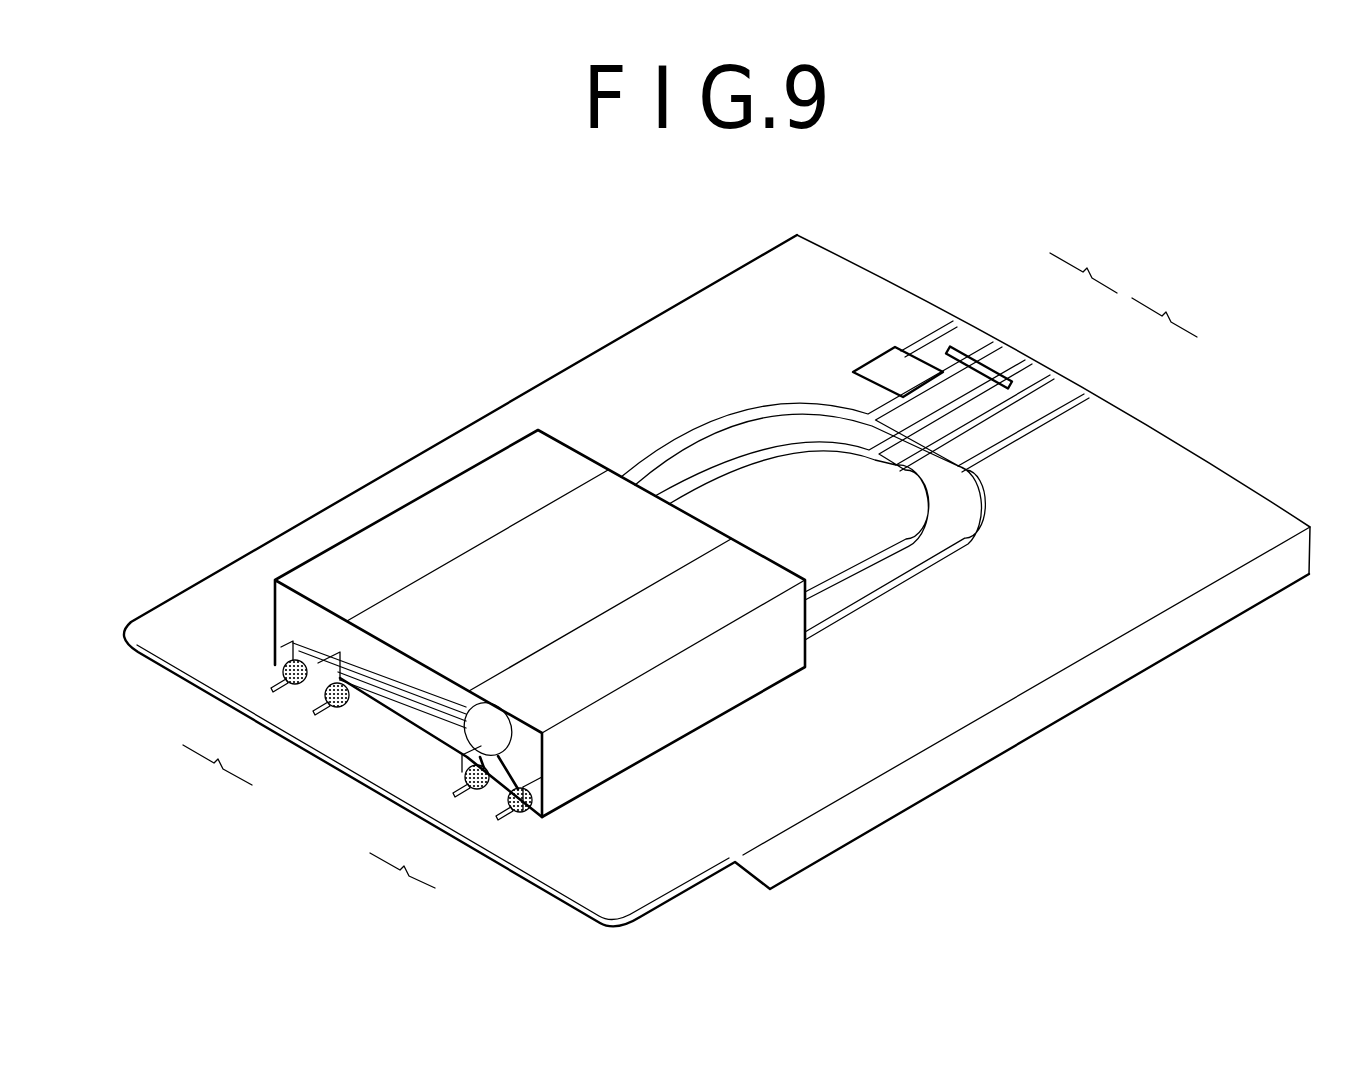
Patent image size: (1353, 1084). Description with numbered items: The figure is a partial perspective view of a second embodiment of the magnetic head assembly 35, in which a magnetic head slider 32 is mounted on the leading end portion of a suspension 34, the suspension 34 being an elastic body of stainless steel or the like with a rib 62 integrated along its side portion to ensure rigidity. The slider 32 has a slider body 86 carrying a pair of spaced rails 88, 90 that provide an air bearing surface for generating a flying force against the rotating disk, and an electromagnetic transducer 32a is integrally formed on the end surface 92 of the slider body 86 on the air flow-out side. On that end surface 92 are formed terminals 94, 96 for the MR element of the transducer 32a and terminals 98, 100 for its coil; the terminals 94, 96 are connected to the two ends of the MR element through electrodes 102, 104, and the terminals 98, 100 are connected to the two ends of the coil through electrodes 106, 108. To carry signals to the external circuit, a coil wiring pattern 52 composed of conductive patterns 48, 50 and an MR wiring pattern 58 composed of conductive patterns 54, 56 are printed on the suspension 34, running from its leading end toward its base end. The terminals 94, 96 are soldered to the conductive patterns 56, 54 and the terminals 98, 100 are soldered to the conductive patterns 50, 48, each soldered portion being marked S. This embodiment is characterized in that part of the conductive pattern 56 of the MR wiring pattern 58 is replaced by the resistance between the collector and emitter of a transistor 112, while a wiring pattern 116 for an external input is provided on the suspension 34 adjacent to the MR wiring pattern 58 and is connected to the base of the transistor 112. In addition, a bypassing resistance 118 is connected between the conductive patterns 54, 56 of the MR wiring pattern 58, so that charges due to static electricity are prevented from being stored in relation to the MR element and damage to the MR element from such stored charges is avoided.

The magnetic head slider 32 is at (363, 484).
The electromagnetic transducer 32a is at (490, 714).
The suspension 34 is at (198, 590).
The magnetic head assembly 35 is at (263, 496).
The conductive pattern 48 is at (1083, 392).
The conductive pattern 50 is at (1043, 365).
The coil wiring pattern 52 is at (781, 599).
The conductive pattern 54 is at (1010, 357).
The conductive pattern 56 is at (985, 345).
The MR wiring pattern 58 is at (648, 524).
The rib 62 is at (1035, 727).
The slider body 86 is at (677, 732).
The rail 88 is at (457, 483).
The rail 90 is at (748, 565).
The end surface 92 is at (258, 598).
The terminal 94 is at (282, 648).
The terminal 96 is at (322, 663).
The terminal 98 is at (458, 768).
The terminal 100 is at (545, 790).
The electrode 102 is at (414, 687).
The electrode 104 is at (433, 707).
The electrode 106 is at (448, 758).
The electrode 108 is at (512, 765).
The transistor 112 is at (865, 358).
The wiring pattern for external input 116 is at (917, 330).
The resistance 118 is at (958, 352).
The soldered portion S is at (282, 670).